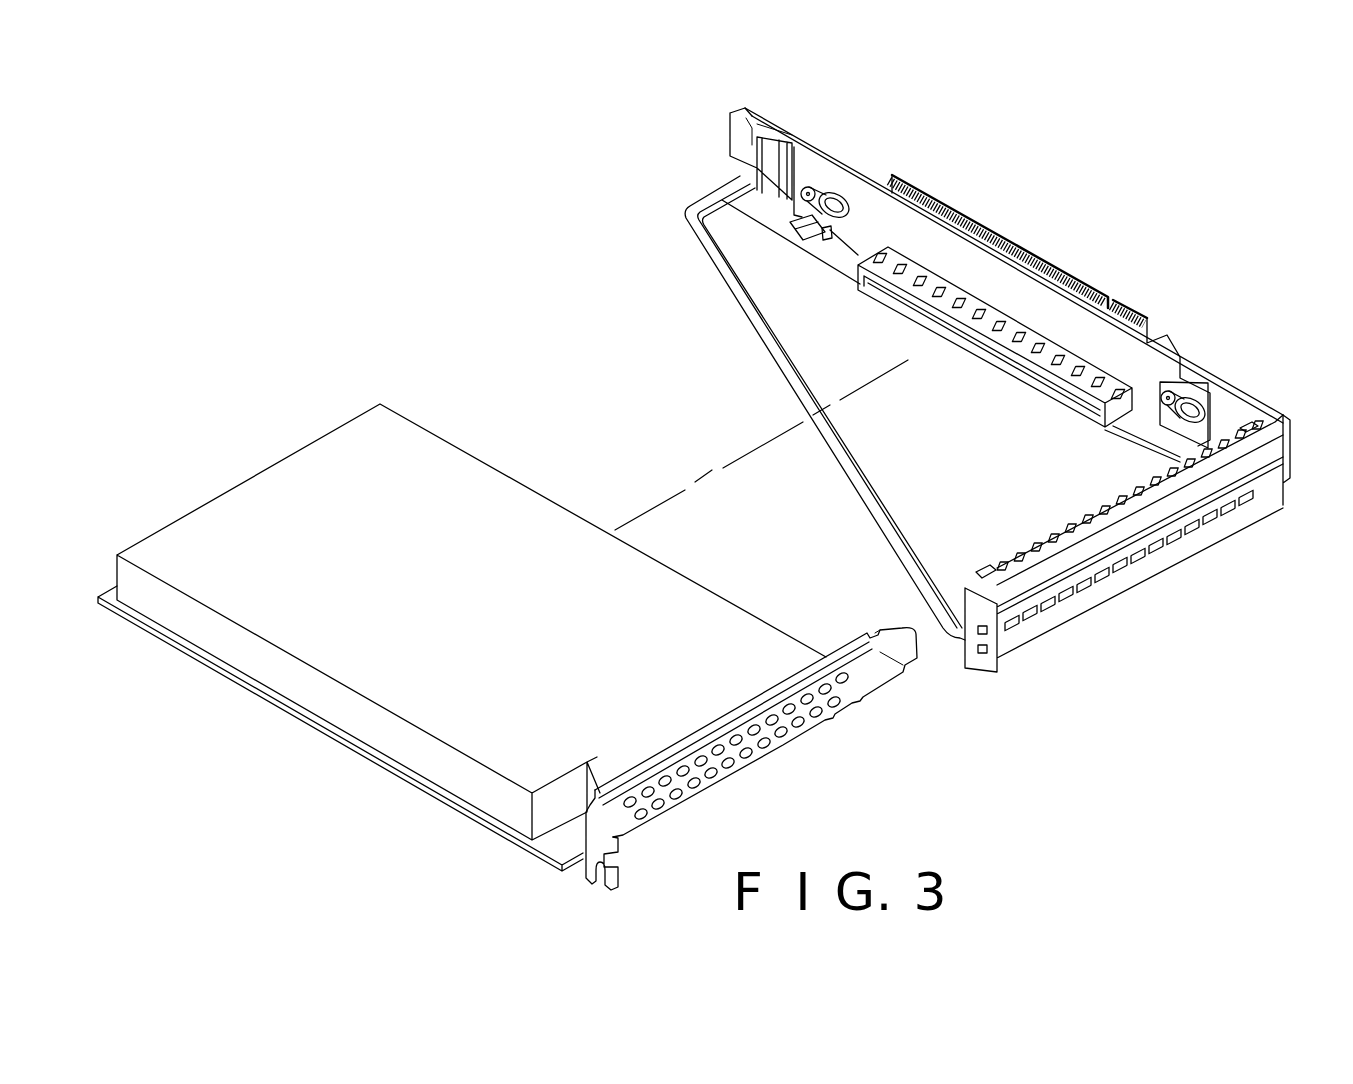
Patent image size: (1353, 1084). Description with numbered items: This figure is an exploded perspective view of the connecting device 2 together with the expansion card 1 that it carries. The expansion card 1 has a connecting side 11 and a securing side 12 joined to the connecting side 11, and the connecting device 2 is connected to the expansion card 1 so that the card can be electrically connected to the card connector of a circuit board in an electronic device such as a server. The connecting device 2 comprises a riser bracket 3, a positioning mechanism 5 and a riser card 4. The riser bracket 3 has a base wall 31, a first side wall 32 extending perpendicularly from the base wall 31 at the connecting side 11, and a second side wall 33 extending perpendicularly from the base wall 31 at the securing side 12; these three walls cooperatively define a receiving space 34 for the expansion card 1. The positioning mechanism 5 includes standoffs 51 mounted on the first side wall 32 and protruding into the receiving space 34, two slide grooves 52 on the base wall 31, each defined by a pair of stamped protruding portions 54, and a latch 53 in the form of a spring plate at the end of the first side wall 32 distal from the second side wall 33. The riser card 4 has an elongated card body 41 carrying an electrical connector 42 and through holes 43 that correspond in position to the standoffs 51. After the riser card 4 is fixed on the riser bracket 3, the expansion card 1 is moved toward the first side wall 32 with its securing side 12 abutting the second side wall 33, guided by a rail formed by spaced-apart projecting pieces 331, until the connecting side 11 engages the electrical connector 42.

The expansion card 1 is at (517, 586).
The connecting side 11 is at (583, 518).
The securing side 12 is at (886, 661).
The connecting device 2 is at (973, 389).
The riser bracket 3 is at (1119, 521).
The base wall 31 is at (753, 258).
The first side wall 32 is at (1223, 410).
The second side wall 33 is at (1257, 464).
The projecting pieces 331 is at (988, 570).
The receiving space 34 is at (1037, 418).
The riser card 4 is at (1037, 315).
The card body 41 is at (952, 253).
The electrical connector 42 is at (968, 342).
The through holes 43 is at (1188, 396).
The positioning mechanism 5 is at (742, 213).
The standoffs 51 is at (808, 187).
The slide grooves 52 is at (828, 238).
The latch 53 is at (766, 167).
The protruding portions 54 is at (800, 229).